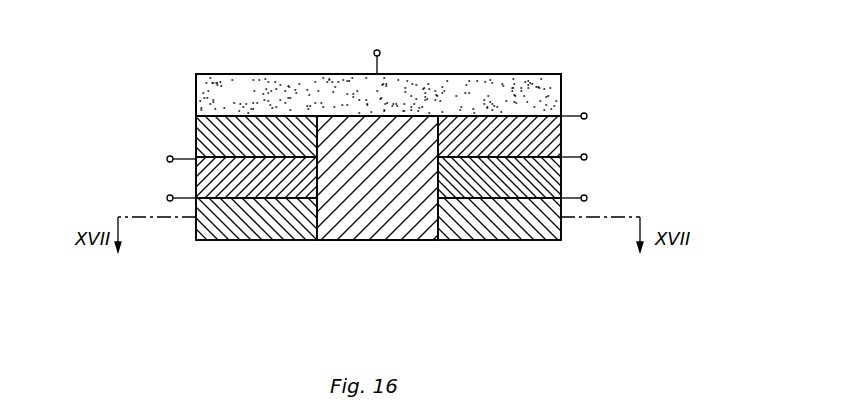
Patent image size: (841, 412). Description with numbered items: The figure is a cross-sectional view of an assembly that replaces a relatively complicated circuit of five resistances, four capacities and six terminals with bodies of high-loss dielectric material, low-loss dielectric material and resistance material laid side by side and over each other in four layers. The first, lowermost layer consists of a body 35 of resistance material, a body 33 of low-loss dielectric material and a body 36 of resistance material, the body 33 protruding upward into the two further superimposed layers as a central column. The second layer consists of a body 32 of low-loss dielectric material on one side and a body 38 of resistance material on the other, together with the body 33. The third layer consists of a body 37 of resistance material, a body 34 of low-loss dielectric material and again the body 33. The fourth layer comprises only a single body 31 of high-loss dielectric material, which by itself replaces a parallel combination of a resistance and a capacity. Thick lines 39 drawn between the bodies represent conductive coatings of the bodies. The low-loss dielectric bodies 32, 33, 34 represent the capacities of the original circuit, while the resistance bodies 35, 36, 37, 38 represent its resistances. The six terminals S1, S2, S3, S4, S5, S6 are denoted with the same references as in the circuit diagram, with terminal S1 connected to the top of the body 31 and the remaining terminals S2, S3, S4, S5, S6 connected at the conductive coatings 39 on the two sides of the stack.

The body of high-loss dielectric material 31 is at (450, 74).
The body of low-loss dielectric material 32 is at (213, 178).
The body of low-loss dielectric material 33 is at (352, 158).
The body of low-loss dielectric material 34 is at (535, 120).
The body of resistance material 35 is at (262, 225).
The body of resistance material 36 is at (500, 225).
The body of resistance material 37 is at (252, 133).
The body of resistance material 38 is at (535, 177).
The conductive coatings 39 is at (230, 76).
The terminal S1 is at (383, 48).
The terminal S2 is at (169, 198).
The terminal S3 is at (167, 161).
The terminal S4 is at (590, 114).
The terminal S5 is at (590, 155).
The terminal S6 is at (590, 197).